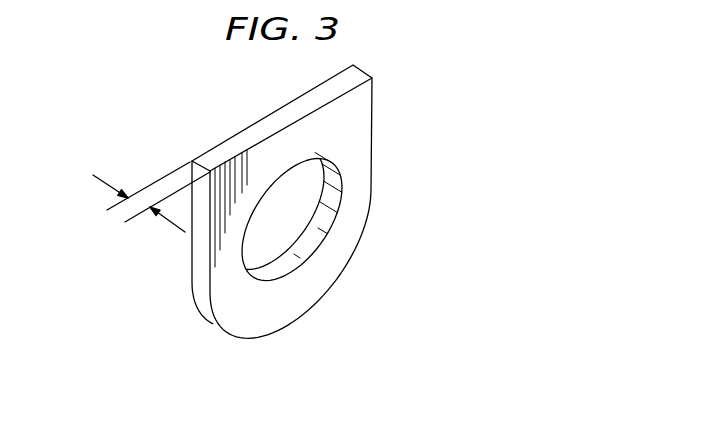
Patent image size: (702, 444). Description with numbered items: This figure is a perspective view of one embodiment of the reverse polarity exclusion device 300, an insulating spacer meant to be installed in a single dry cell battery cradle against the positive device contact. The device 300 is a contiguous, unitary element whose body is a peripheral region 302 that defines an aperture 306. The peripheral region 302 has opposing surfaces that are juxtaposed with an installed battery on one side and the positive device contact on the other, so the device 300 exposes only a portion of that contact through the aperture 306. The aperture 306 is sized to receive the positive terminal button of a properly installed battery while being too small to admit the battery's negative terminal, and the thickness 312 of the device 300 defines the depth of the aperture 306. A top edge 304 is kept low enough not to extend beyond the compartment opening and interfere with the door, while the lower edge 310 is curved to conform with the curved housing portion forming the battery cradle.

The exclusion device 300 is at (288, 215).
The peripheral region 302 is at (337, 252).
The top edge 304 is at (248, 127).
The aperture 306 is at (278, 218).
The lower edge 310 is at (228, 331).
The thickness 312 is at (104, 182).